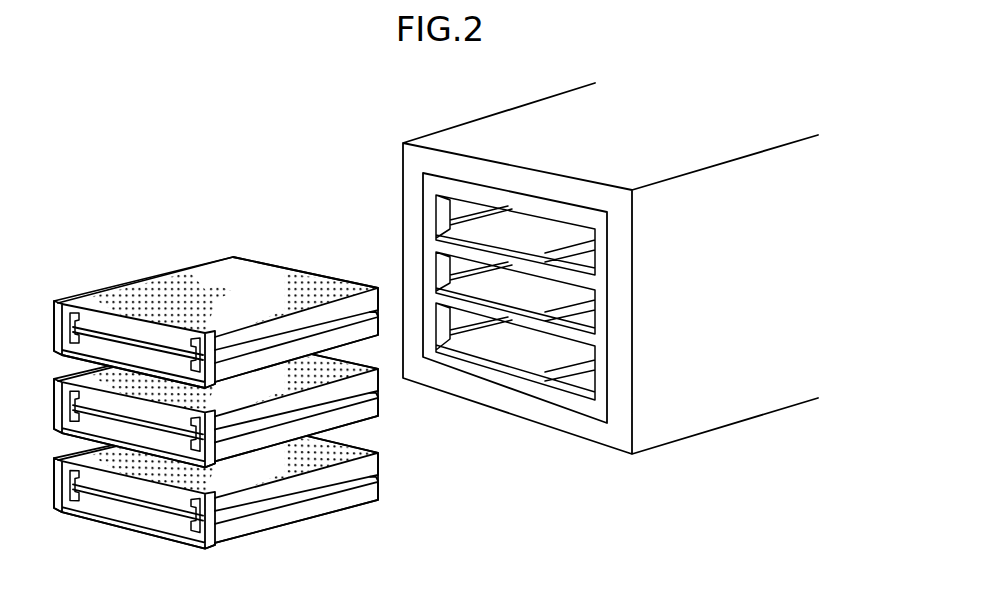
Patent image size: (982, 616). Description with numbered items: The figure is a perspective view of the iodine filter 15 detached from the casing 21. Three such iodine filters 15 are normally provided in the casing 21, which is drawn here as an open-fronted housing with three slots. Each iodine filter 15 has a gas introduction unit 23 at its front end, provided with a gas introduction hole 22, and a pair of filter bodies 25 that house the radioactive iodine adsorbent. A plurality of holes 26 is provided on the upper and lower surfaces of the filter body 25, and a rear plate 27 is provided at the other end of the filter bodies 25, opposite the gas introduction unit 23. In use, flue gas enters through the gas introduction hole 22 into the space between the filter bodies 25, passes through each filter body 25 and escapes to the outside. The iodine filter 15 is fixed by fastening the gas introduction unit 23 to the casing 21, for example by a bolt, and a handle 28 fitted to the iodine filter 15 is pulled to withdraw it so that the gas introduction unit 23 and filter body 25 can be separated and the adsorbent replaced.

The iodine filter 15 is at (216, 279).
The casing 21 is at (607, 423).
The gas introduction hole 22 is at (120, 500).
The gas introduction unit 23 is at (98, 322).
The filter body 25 is at (127, 283).
The holes 26 is at (165, 280).
The rear plate 27 is at (373, 477).
The handle 28 is at (190, 525).